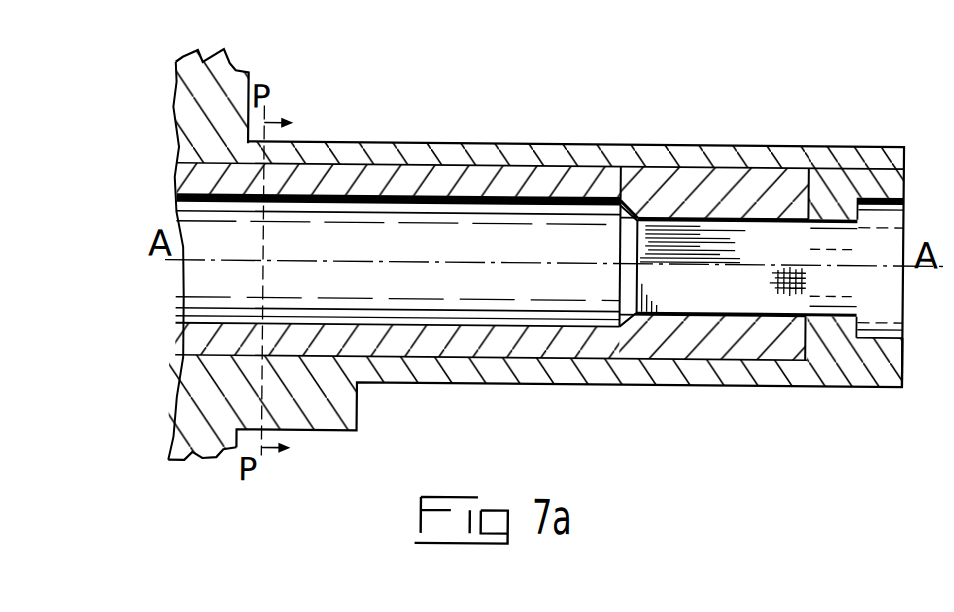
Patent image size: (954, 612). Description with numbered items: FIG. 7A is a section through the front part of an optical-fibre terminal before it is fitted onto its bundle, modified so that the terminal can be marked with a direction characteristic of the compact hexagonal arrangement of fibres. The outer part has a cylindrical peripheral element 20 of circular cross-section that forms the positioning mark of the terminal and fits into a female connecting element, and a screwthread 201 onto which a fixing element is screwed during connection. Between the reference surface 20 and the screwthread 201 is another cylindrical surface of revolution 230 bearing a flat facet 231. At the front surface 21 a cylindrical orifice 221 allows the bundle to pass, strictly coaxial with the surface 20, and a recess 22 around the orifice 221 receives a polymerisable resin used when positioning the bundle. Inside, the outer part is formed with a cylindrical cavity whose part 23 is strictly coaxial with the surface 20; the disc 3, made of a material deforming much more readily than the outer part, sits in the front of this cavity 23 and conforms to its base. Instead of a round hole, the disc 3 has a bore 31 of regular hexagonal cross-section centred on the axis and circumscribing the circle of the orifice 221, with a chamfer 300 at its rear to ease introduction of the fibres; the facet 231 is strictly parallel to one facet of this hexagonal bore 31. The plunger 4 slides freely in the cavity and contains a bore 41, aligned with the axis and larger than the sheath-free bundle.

The cylindrical peripheral element 20 is at (610, 145).
The screwthread 201 is at (232, 72).
The cylindrical surface of revolution 230 is at (313, 433).
The flat facet 231 is at (329, 145).
The cavity part 23 is at (445, 151).
The plunger 4 is at (503, 180).
The bore 41 is at (548, 240).
The disc 3 is at (715, 196).
The bore 31 is at (697, 296).
The chamfer 300 is at (597, 332).
The recess 22 is at (904, 198).
The cylindrical orifice 221 is at (838, 197).
The front surface 21 is at (903, 360).